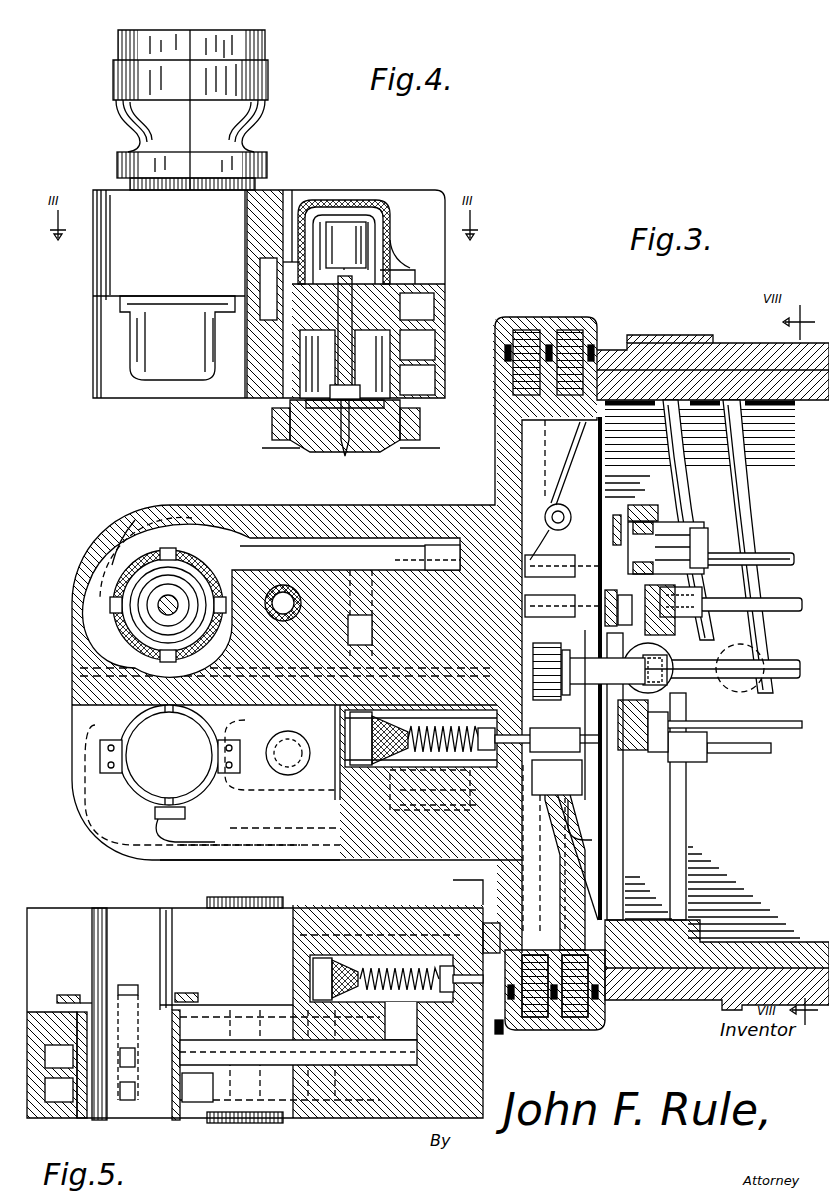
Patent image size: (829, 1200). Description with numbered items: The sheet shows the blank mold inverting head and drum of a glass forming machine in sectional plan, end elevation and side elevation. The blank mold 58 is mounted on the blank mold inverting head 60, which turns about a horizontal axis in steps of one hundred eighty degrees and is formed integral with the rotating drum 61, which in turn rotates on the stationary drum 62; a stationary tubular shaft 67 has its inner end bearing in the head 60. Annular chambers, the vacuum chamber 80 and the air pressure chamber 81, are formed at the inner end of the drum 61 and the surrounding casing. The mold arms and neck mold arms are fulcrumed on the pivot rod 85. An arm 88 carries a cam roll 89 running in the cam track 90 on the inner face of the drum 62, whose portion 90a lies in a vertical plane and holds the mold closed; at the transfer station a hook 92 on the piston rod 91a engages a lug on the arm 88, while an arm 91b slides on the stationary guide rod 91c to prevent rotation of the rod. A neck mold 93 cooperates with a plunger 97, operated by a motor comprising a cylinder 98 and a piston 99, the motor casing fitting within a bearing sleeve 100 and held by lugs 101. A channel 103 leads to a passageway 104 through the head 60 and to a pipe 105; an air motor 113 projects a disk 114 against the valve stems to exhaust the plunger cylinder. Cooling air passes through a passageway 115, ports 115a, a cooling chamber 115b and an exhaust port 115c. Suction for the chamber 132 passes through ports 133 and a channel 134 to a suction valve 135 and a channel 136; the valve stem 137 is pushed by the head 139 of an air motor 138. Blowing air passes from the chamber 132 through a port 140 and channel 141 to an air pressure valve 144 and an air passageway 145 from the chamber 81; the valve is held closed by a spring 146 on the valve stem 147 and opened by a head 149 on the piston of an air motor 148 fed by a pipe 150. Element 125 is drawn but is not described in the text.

In FIG. 4, the blank mold 58 is at (258, 90).
In FIG. 5, the blank mold 58 is at (192, 1010).
In FIG. 4, the blank mold inverting head 60 is at (322, 190).
In FIG. 3, the blank mold inverting head 60 is at (80, 648).
In FIG. 5, the blank mold inverting head 60 is at (255, 999).
In FIG. 3, the rotating drum 61 is at (720, 348).
In FIG. 3, the stationary drum 62 is at (632, 390).
In FIG. 3, the tubular shaft 67 is at (530, 684).
In FIG. 3, the vacuum chamber 80 is at (522, 340).
In FIG. 3, the air pressure chamber 81 is at (566, 340).
In FIG. 3, the pivot rod 85 is at (288, 590).
In FIG. 3, the arm 88 is at (580, 660).
In FIG. 3, the cam roll 89 is at (660, 660).
In FIG. 3, the cam track 90 is at (690, 512).
In FIG. 3, the cam track portion 90a is at (690, 812).
In FIG. 3, the piston rod 91a is at (778, 670).
In FIG. 3, the arm 91b is at (688, 695).
In FIG. 3, the stationary guide rod 91c is at (778, 748).
In FIG. 3, the hook 92 is at (640, 668).
In FIG. 4, the neck mold 93 is at (258, 166).
In FIG. 4, the plunger 97 is at (350, 358).
In FIG. 3, the plunger 97 is at (176, 600).
In FIG. 4, the cylinder 98 is at (374, 232).
In FIG. 4, the piston 99 is at (352, 282).
In FIG. 3, the bearing sleeve 100 is at (212, 770).
In FIG. 5, the bearing sleeve 100 is at (185, 993).
In FIG. 4, the lugs 101 is at (188, 315).
In FIG. 3, the lugs 101 is at (128, 760).
In FIG. 5, the lugs 101 is at (60, 995).
In FIG. 4, the channel 103 is at (388, 272).
In FIG. 4, the passageway 104 is at (420, 306).
In FIG. 3, the passageway 104 is at (195, 535).
In FIG. 3, the pipe 105 is at (588, 838).
In FIG. 3, the air motor 113 is at (700, 760).
In FIG. 3, the disk 114 is at (605, 778).
In FIG. 4, the passageway 115 is at (266, 284).
In FIG. 3, the passageway 115 is at (108, 730).
In FIG. 4, the ports 115a is at (262, 262).
In FIG. 4, the cooling chamber 115b is at (340, 205).
In FIG. 4, the port 115c is at (418, 243).
In FIG. 3, the slide 125 is at (352, 580).
In FIG. 4, the chamber 132 is at (315, 392).
In FIG. 5, the chamber 132 is at (176, 1100).
In FIG. 4, the ports 133 is at (356, 392).
In FIG. 4, the channel 134 is at (420, 378).
In FIG. 3, the channel 134 is at (135, 522).
In FIG. 5, the channel 134 is at (200, 1104).
In FIG. 3, the suction valve 135 is at (360, 745).
In FIG. 3, the channel 136 is at (540, 856).
In FIG. 3, the valve stem 137 is at (570, 600).
In FIG. 3, the air motor 138 is at (700, 612).
In FIG. 3, the head 139 is at (610, 628).
In FIG. 4, the port 140 is at (352, 350).
In FIG. 5, the port 140 is at (175, 1050).
In FIG. 4, the channel 141 is at (420, 342).
In FIG. 3, the channel 141 is at (268, 828).
In FIG. 5, the channel 141 is at (358, 1066).
In FIG. 3, the air pressure valve 144 is at (405, 565).
In FIG. 5, the air pressure valve 144 is at (312, 996).
In FIG. 3, the air passageway 145 is at (402, 852).
In FIG. 5, the air passageway 145 is at (312, 975).
In FIG. 5, the valve closing spring 146 is at (405, 985).
In FIG. 3, the valve stem 147 is at (570, 548).
In FIG. 5, the valve stem 147 is at (488, 1035).
In FIG. 3, the air motor 148 is at (700, 542).
In FIG. 3, the head 149 is at (612, 545).
In FIG. 3, the pipe 150 is at (790, 553).